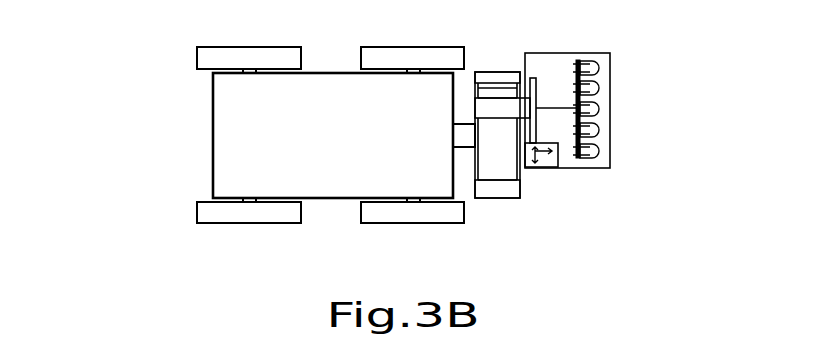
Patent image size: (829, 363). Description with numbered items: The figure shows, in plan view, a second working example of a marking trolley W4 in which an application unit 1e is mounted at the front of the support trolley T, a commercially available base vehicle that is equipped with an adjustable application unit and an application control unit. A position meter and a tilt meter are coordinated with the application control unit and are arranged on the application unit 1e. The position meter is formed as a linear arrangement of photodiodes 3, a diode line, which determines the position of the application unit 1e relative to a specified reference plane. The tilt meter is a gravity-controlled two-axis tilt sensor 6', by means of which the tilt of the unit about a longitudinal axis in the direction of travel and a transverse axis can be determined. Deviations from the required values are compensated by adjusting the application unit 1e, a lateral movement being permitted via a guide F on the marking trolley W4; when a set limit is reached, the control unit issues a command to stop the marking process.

The support trolley T is at (232, 93).
The marking trolley W4 is at (160, 149).
The guide F is at (512, 168).
The application unit 1e is at (610, 158).
The photodiodes 3 is at (577, 60).
The two-axis tilt sensor 6' is at (569, 201).